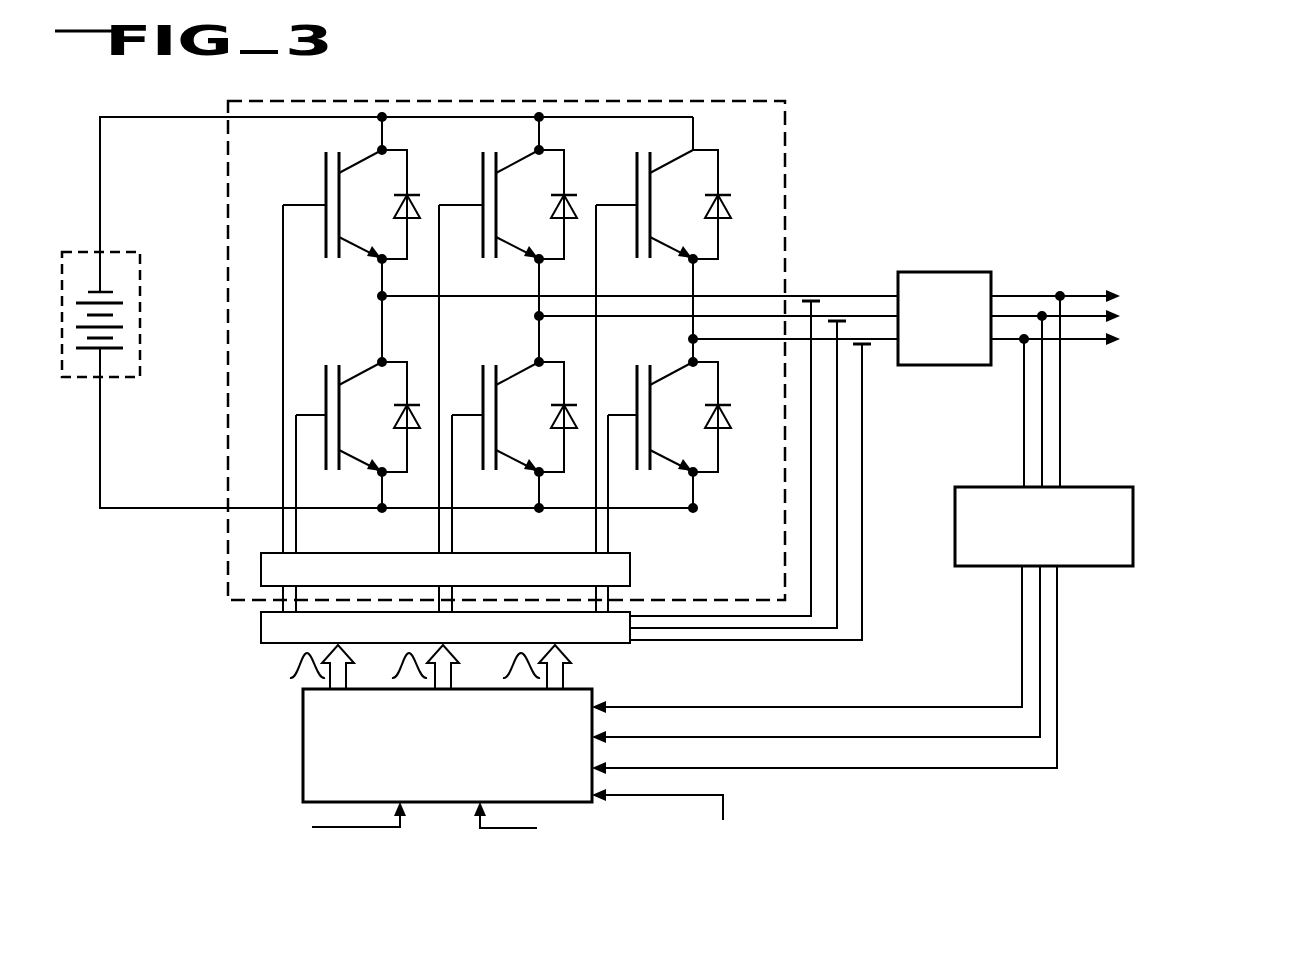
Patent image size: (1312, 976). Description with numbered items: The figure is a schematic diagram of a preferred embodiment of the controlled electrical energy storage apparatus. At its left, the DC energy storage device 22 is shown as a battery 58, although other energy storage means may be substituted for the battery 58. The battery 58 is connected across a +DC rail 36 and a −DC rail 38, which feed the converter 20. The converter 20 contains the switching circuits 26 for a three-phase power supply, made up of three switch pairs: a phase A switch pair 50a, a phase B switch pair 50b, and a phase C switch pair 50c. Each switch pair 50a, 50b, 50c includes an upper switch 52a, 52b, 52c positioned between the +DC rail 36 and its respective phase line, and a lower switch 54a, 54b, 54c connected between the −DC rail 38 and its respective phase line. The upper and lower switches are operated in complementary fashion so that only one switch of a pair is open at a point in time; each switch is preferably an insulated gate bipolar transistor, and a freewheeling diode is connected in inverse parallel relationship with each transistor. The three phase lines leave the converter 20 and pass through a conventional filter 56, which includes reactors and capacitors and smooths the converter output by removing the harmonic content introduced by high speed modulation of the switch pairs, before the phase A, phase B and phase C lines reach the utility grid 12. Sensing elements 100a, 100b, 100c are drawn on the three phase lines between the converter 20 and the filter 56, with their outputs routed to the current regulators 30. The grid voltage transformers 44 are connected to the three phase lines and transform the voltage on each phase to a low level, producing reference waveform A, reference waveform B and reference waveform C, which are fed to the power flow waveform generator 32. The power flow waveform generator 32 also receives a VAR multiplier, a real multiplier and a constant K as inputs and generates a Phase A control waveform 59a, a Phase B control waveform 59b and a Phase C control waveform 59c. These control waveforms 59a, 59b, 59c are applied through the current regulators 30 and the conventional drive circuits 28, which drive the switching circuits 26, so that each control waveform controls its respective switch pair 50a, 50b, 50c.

The converter 20 is at (723, 92).
The switching circuits 26 is at (454, 110).
The +DC rail 36 is at (132, 116).
The DC energy storage device 22 is at (87, 249).
The battery 58 is at (92, 293).
The −DC rail 38 is at (112, 510).
The upper switch 52a is at (322, 170).
The upper switch 52b is at (480, 170).
The upper switch 52c is at (634, 170).
The phase A switch pair 50a is at (363, 265).
The phase B switch pair 50b is at (517, 275).
The phase C switch pair 50c is at (672, 268).
The lower switch 54a is at (415, 393).
The lower switch 54b is at (572, 394).
The lower switch 54c is at (741, 414).
The current sensor phase A 100a is at (811, 300).
The current sensor phase B 100b is at (837, 320).
The current sensor phase C 100c is at (862, 343).
The filter 56 is at (927, 272).
The utility grid 12 is at (1253, 374).
The grid voltage transformers 44 is at (1117, 487).
The drive circuits 28 is at (640, 566).
The current regulators 30 is at (625, 645).
The Phase A control waveform 59a is at (288, 675).
The Phase B control waveform 59b is at (390, 675).
The Phase C control waveform 59c is at (500, 675).
The power flow waveform generator 32 is at (446, 803).